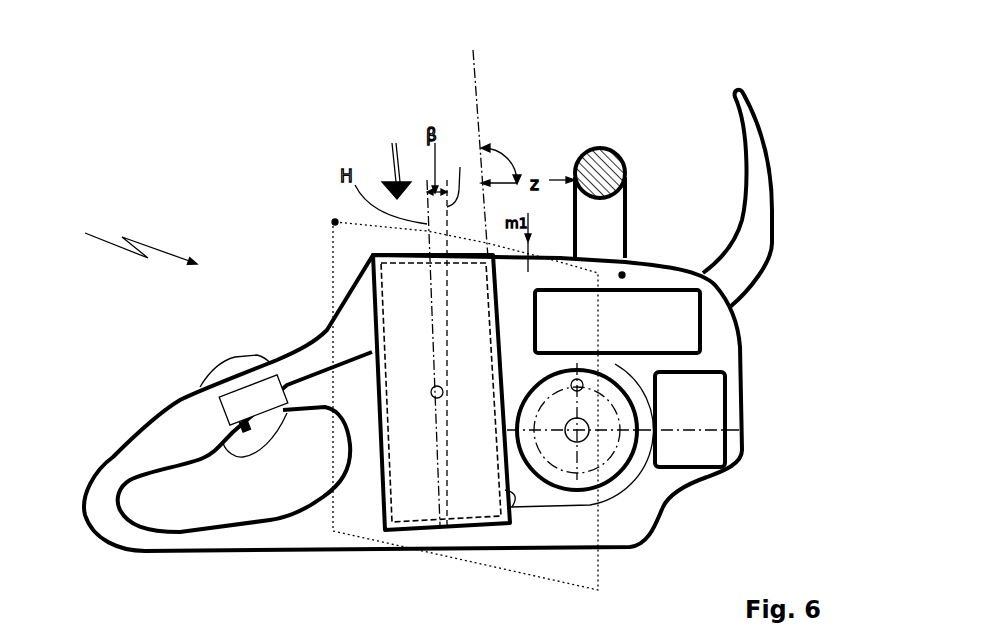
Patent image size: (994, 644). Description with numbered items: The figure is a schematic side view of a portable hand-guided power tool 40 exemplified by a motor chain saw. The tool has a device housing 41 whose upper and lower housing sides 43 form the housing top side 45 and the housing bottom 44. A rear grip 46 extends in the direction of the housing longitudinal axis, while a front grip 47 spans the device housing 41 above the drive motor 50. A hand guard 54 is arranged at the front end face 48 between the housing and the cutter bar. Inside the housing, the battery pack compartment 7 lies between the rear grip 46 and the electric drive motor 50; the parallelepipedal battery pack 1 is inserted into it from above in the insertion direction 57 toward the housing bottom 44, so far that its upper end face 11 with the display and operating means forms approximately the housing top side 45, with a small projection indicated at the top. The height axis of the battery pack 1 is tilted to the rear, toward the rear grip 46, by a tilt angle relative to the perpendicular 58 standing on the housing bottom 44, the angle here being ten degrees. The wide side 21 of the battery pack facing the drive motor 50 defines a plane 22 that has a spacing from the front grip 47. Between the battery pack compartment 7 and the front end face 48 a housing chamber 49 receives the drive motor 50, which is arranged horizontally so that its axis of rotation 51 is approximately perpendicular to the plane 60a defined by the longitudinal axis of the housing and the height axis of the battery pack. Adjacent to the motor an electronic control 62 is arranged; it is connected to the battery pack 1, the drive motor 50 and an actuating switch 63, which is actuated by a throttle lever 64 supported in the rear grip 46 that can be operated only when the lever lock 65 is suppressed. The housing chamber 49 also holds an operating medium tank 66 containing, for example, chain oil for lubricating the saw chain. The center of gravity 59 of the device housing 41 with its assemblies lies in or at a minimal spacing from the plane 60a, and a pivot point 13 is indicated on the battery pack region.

The battery pack 1 is at (363, 552).
The battery pack compartment 7 is at (370, 325).
The end face 11 is at (397, 252).
The pivot bearing 13 is at (431, 392).
The wide side 21 is at (512, 507).
The plane 22 is at (477, 80).
The power tool 40 is at (125, 243).
The device housing 41 is at (347, 295).
The housing side 43 is at (627, 265).
The housing bottom 44 is at (423, 546).
The housing top side 45 is at (547, 255).
The rear grip 46 is at (163, 547).
The front grip 47 is at (612, 153).
The front end face 48 is at (748, 360).
The housing chamber 49 is at (622, 275).
The drive motor 50 is at (553, 487).
The axis of rotation 51 is at (580, 390).
The hand guard 54 is at (760, 190).
The insertion direction 57 is at (390, 145).
The perpendicular 58 is at (459, 177).
The center of gravity 59 is at (588, 433).
The plane 60a is at (333, 220).
The electronic control 62 is at (648, 315).
The actuating switch 63 is at (243, 407).
The throttle lever 64 is at (243, 447).
The lever lock 65 is at (238, 363).
The operating medium tank 66 is at (710, 445).